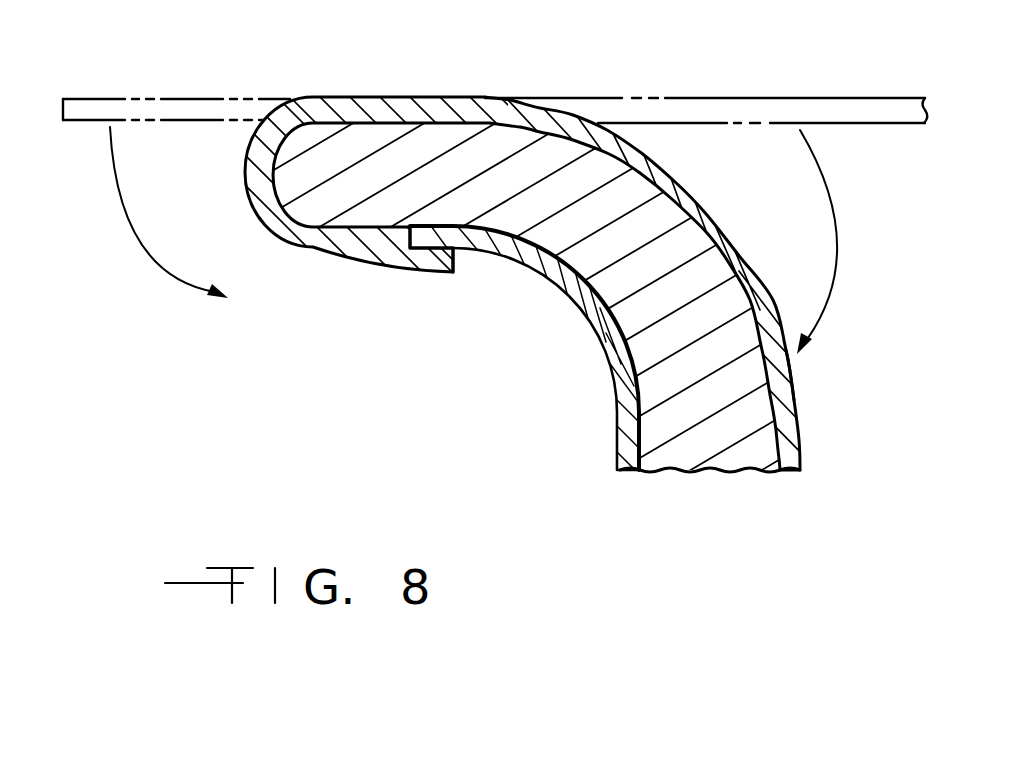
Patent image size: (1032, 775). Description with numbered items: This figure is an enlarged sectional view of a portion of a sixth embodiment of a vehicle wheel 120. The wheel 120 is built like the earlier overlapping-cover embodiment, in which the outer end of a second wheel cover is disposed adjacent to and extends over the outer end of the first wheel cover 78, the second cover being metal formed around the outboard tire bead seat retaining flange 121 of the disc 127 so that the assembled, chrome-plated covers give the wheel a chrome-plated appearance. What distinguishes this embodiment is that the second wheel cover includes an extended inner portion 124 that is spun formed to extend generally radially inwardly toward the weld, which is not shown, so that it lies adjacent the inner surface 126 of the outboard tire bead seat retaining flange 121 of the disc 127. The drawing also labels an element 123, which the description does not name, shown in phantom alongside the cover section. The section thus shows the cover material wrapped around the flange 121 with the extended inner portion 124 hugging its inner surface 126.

The first wheel cover 78 is at (600, 410).
The vehicle wheel 120 is at (856, 208).
The outboard tire bead seat retaining flange 121 is at (695, 232).
The flange plate 123 is at (155, 98).
The extended inner portion 124 is at (833, 98).
The inner surface 126 is at (797, 372).
The disc 127 is at (719, 490).